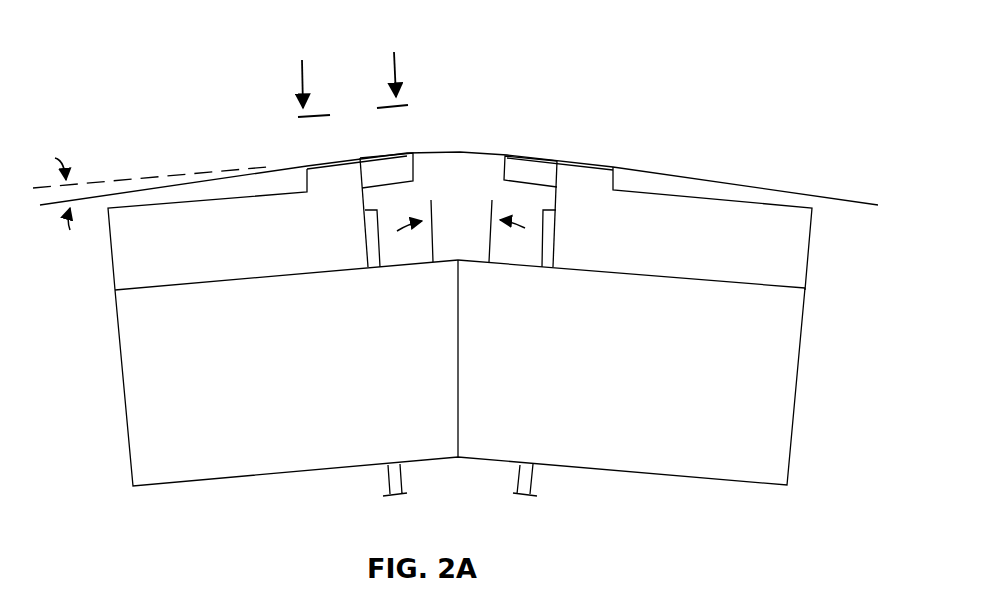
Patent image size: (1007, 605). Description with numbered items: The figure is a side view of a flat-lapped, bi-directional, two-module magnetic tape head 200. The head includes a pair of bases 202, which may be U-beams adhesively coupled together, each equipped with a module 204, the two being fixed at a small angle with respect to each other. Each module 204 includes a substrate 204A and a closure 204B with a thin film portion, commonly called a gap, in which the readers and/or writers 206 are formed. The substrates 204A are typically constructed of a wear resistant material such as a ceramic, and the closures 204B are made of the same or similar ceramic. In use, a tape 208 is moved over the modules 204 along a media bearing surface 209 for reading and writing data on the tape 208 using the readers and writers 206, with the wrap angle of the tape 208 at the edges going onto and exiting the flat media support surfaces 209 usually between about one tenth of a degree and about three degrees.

The display device assembly 200 is at (168, 114).
The base 202 is at (120, 362).
The module 204 is at (108, 257).
The substrate 204A is at (177, 231).
The closure 204B is at (507, 172).
The readers and/or writers 206 is at (363, 153).
The tape 208 is at (717, 178).
The media bearing surface 209 is at (309, 155).